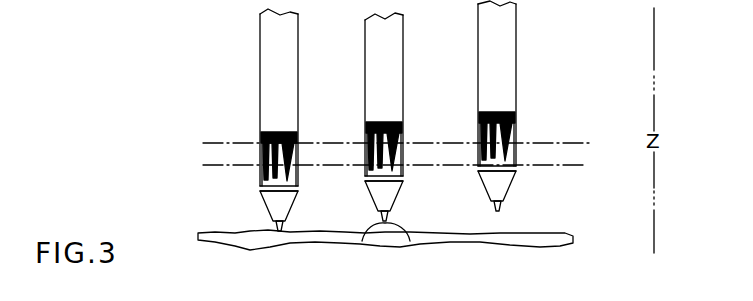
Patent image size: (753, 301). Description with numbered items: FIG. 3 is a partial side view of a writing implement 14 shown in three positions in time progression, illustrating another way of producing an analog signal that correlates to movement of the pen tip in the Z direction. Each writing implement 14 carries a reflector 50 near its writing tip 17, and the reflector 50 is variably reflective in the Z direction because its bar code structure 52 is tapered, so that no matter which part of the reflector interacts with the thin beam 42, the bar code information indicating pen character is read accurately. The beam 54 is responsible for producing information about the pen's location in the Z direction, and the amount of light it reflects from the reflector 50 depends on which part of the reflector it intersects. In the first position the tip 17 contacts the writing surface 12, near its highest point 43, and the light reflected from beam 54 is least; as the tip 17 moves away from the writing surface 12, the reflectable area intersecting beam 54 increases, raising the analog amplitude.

The writing surface 12 is at (242, 238).
The writing implement 14 is at (262, 52).
The writing tip 17 is at (281, 227).
The laser beam 42 is at (575, 143).
The highest point on the writing surface 43 is at (362, 243).
The reflector 50 is at (266, 143).
The bar code structure 52 is at (301, 146).
The beam 54 is at (576, 166).